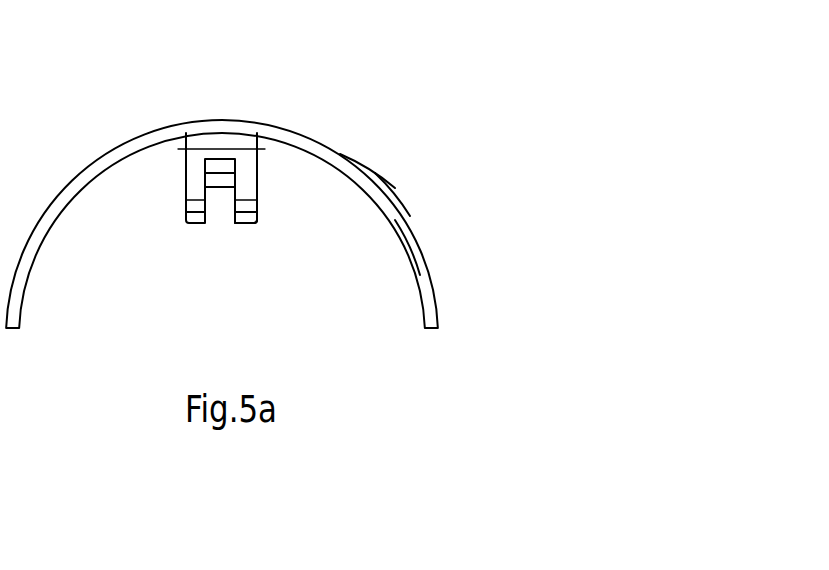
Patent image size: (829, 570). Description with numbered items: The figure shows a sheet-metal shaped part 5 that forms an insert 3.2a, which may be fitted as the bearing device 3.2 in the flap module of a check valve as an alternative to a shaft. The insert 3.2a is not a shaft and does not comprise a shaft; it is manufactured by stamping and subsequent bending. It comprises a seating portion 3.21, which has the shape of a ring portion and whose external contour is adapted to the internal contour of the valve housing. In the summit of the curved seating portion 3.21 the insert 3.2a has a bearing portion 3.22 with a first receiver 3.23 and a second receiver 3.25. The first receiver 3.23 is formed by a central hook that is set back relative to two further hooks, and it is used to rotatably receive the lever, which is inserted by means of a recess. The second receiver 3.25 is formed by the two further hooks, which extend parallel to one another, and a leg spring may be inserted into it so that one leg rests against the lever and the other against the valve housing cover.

The bearing device 3.2 is at (337, 85).
The insert 3.2a is at (371, 139).
The sheet-metal shaped part 5 is at (391, 200).
The seating portion 3.21 is at (423, 250).
The bearing portion 3.22 is at (171, 238).
The first receiver 3.23 is at (225, 188).
The second receiver 3.25 is at (258, 221).